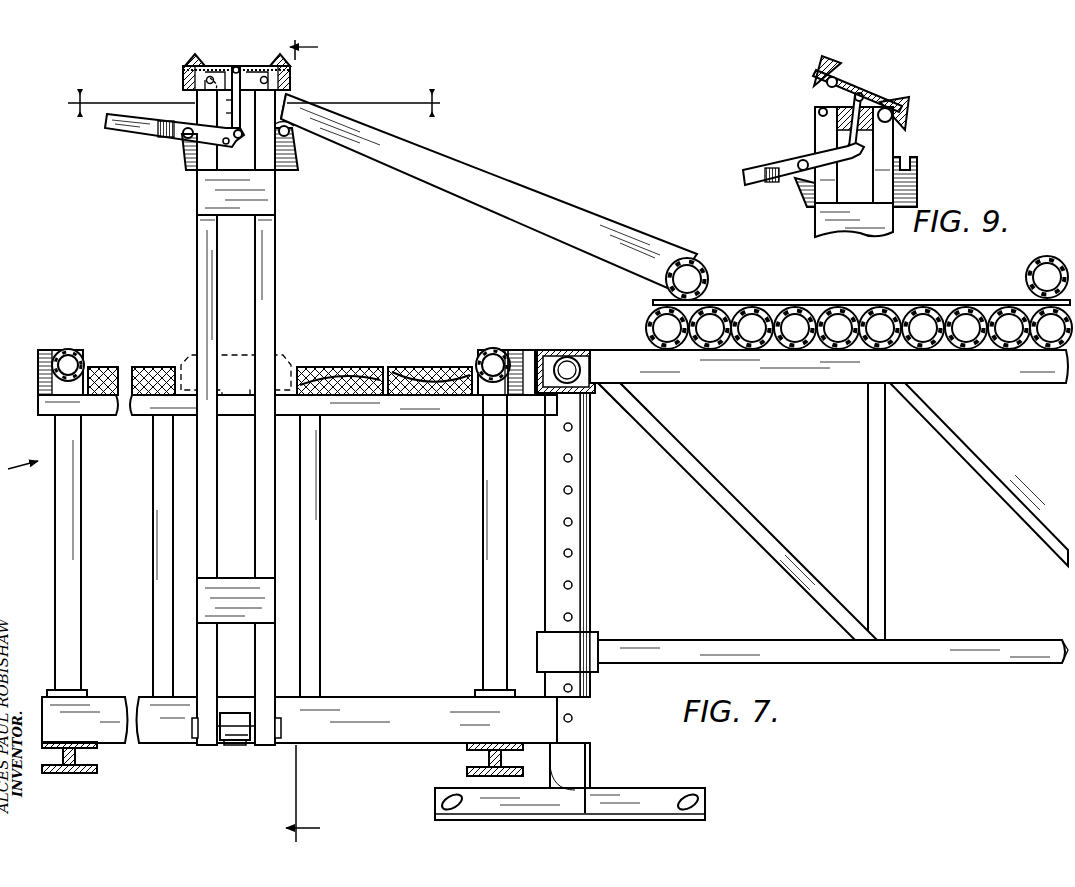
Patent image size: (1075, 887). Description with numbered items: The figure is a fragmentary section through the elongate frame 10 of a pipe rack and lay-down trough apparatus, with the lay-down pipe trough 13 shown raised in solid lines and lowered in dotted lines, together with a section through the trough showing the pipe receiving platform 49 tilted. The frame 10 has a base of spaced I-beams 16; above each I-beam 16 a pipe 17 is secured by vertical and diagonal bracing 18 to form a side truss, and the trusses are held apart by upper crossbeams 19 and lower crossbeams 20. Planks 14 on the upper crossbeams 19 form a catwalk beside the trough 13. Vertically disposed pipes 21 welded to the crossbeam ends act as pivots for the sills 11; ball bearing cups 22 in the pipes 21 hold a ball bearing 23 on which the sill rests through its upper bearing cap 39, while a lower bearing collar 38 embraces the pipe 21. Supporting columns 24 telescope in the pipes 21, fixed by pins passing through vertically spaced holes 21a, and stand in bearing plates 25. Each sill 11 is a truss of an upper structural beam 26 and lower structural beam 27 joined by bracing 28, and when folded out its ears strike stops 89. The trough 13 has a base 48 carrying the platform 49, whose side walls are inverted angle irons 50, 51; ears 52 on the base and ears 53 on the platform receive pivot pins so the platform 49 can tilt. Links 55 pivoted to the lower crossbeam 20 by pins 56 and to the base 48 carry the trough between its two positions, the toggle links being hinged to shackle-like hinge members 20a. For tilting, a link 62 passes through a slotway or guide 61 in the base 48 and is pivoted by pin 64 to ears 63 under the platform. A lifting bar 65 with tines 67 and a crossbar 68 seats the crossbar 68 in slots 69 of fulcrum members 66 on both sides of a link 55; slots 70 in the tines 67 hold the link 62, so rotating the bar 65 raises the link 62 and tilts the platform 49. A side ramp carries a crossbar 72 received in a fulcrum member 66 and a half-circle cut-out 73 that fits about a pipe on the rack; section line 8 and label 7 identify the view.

In FIG. 7, the boom 7 is at (452, 170).
In FIG. 7, the section line 8- 8 is at (312, 439).
In FIG. 7, the elongate frame section 10 is at (256, 103).
In FIG. 7, the sills 11 is at (1032, 668).
In FIG. 7, the lay-down pipe trough 13 is at (173, 75).
In FIG. 9, the lay-down pipe trough 13 is at (800, 66).
In FIG. 7, the catwalk of planks 14 is at (428, 368).
In FIG. 7, the I-beams 16 is at (65, 782).
In FIG. 7, the pipe 17 is at (33, 382).
In FIG. 7, the vertical and diagonal bracing 18 is at (60, 553).
In FIG. 7, the upper crossbeams 19 is at (445, 408).
In FIG. 7, the lower crossbeams 20 is at (122, 686).
In FIG. 7, the shackle-like hinge members 20a is at (242, 746).
In FIG. 7, the vertically disposed pipes 21 is at (584, 542).
In FIG. 7, the vertically spaced holes 21a is at (573, 586).
In FIG. 7, the ball bearing cups 22 is at (596, 388).
In FIG. 7, the ball bearing 23 is at (566, 350).
In FIG. 7, the supporting columns 24 is at (588, 775).
In FIG. 7, the bearing plates 25 is at (706, 803).
In FIG. 7, the upper structural beam 26 is at (795, 384).
In FIG. 7, the lower structural beam 27 is at (942, 648).
In FIG. 7, the vertical and diagonal bracing 28 is at (868, 512).
In FIG. 7, the lower bearing collar 38 is at (598, 670).
In FIG. 7, the upper bearing cap 39 is at (592, 350).
In FIG. 7, the base 48 is at (240, 393).
In FIG. 7, the pipe receiving platform 49 is at (236, 66).
In FIG. 9, the pipe receiving platform 49 is at (848, 85).
In FIG. 7, the inverted angle iron 50 is at (191, 59).
In FIG. 7, the inverted angle iron 51 is at (292, 66).
In FIG. 9, the inverted angle iron 51 is at (912, 106).
In FIG. 7, the ears 52 is at (222, 57).
In FIG. 9, the ears 52 is at (819, 110).
In FIG. 7, the ears 53 is at (197, 92).
In FIG. 9, the ears 53 is at (815, 85).
In FIG. 7, the links 55 is at (203, 259).
In FIG. 7, the pins 56 is at (226, 741).
In FIG. 7, the slotway or guide 61 is at (225, 103).
In FIG. 7, the link 62 is at (258, 136).
In FIG. 7, the ears 63 is at (264, 70).
In FIG. 7, the pivot pin 64 is at (242, 62).
In FIG. 7, the lifting bar 65 is at (140, 134).
In FIG. 9, the lifting bar 65 is at (760, 172).
In FIG. 7, the fulcrum members 66 is at (188, 160).
In FIG. 9, the fulcrum members 66 is at (812, 192).
In FIG. 7, the tines 67 is at (226, 145).
In FIG. 9, the tines 67 is at (852, 158).
In FIG. 7, the crossbar 68 is at (184, 138).
In FIG. 7, the slots 69 is at (198, 128).
In FIG. 7, the slots 70 is at (240, 139).
In FIG. 7, the crossbar 72 is at (306, 108).
In FIG. 7, the half-circle cut-out 73 is at (720, 246).
In FIG. 7, the stops 89 is at (538, 318).